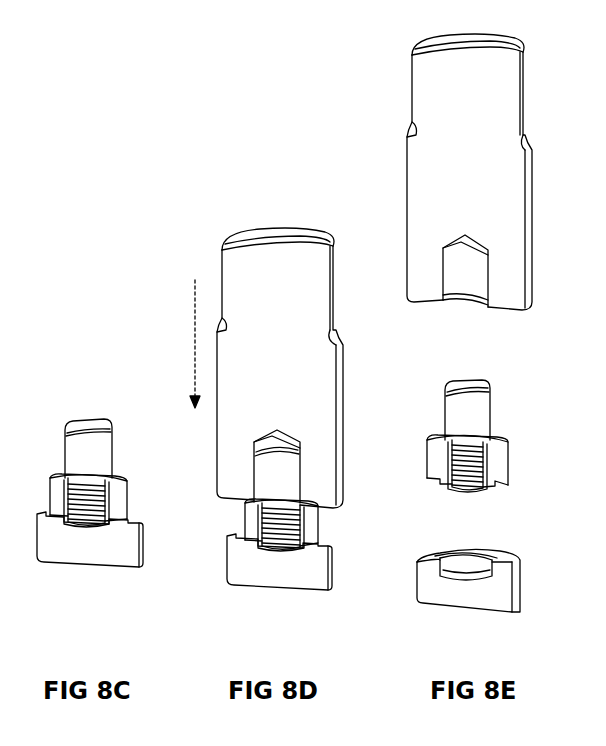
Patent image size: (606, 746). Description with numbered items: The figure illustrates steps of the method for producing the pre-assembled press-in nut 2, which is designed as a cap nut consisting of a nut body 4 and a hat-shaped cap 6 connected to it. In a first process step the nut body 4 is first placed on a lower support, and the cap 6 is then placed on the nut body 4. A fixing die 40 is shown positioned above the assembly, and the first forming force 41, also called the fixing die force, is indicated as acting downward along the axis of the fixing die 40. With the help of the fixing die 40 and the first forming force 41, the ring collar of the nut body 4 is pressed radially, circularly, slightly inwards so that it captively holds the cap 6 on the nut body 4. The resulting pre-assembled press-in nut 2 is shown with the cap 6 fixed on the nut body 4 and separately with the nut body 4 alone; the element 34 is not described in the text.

In FIG. 8E, the pre-assembled press-in nut 2 is at (504, 394).
In FIG. 8C, the nut body 4 is at (112, 508).
In FIG. 8D, the nut body 4 is at (316, 532).
In FIG. 8C, the cap 6 is at (62, 452).
In FIG. 8D, the cap 6 is at (296, 486).
In FIG. 8C, the base block 34 is at (72, 548).
In FIG. 8D, the base block 34 is at (265, 563).
In FIG. 8E, the base block 34 is at (440, 588).
In FIG. 8D, the fixing die 40 is at (233, 270).
In FIG. 8E, the fixing die 40 is at (432, 88).
In FIG. 8D, the first forming force 41 is at (195, 333).